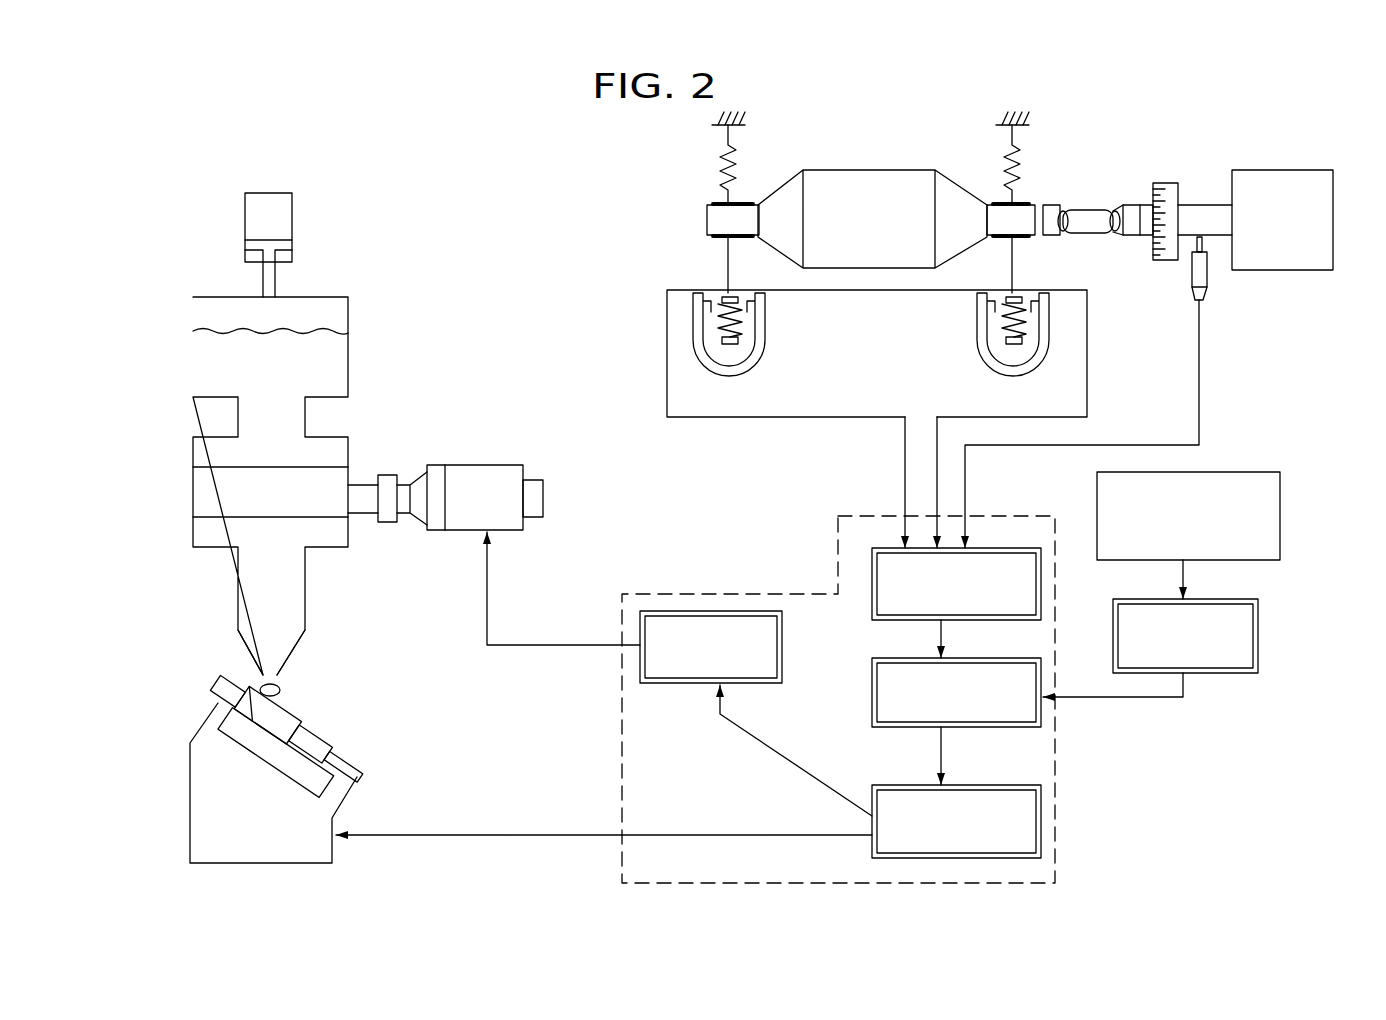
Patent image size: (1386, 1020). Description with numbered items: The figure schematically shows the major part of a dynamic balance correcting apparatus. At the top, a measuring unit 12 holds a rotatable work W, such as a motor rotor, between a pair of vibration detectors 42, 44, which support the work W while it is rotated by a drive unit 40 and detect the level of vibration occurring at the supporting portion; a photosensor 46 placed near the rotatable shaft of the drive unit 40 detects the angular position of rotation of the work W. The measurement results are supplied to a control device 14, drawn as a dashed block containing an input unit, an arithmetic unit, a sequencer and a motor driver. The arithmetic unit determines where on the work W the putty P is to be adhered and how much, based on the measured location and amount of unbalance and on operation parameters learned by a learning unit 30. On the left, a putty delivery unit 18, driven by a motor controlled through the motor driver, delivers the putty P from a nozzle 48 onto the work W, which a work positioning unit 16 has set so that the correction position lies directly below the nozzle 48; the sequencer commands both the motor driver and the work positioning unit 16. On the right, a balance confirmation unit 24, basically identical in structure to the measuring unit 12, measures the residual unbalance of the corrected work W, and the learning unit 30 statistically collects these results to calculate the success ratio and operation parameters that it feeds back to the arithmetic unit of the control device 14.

The measuring unit 12 is at (870, 478).
The control device 14 is at (1057, 785).
The work positioning unit 16 is at (183, 783).
The putty delivery unit 18 is at (180, 533).
The balance confirmation unit 24 is at (1280, 512).
The learning unit 30 is at (1258, 638).
The drive unit 40 is at (1283, 271).
The vibration detector 42 is at (744, 326).
The vibration detector 44 is at (1000, 326).
The photosensor 46 is at (1208, 282).
The nozzle 48 is at (263, 668).
The putty P is at (226, 375).
The work W is at (866, 170).